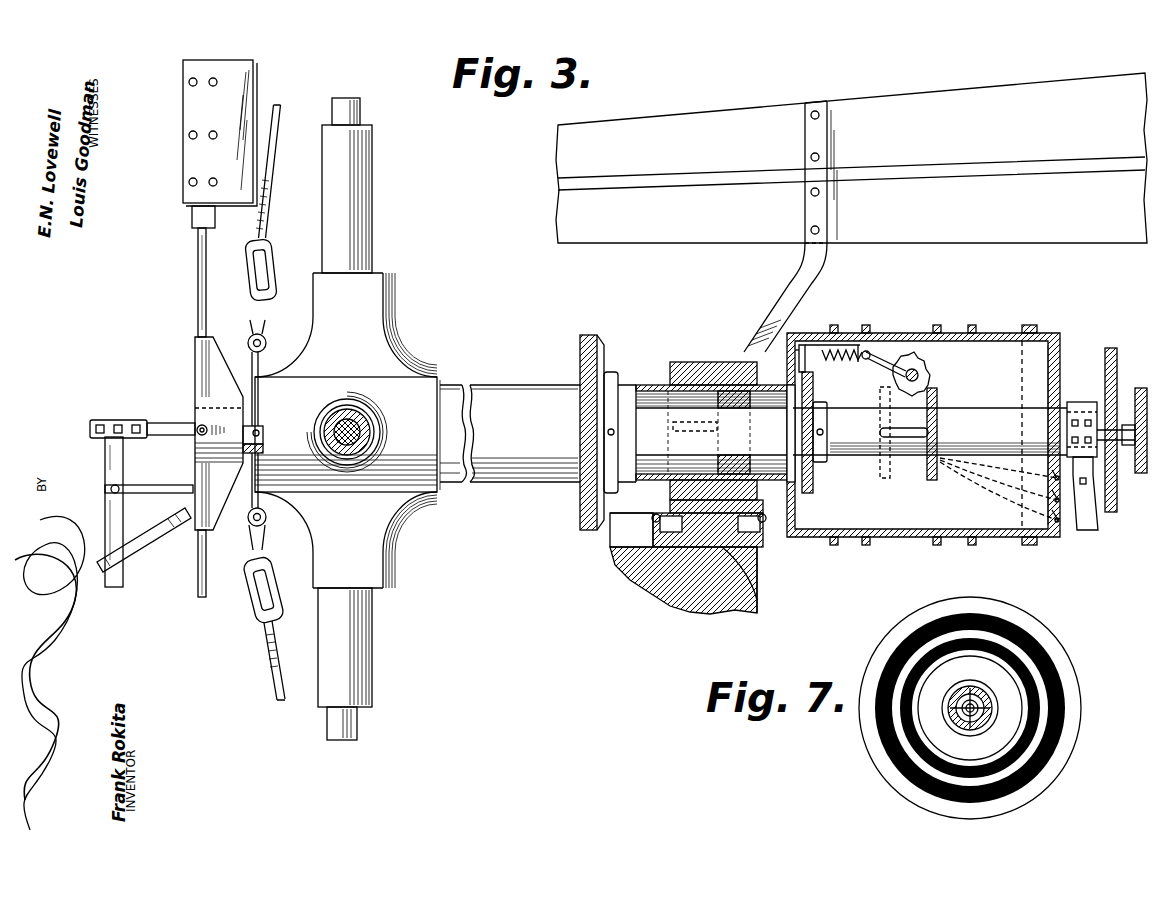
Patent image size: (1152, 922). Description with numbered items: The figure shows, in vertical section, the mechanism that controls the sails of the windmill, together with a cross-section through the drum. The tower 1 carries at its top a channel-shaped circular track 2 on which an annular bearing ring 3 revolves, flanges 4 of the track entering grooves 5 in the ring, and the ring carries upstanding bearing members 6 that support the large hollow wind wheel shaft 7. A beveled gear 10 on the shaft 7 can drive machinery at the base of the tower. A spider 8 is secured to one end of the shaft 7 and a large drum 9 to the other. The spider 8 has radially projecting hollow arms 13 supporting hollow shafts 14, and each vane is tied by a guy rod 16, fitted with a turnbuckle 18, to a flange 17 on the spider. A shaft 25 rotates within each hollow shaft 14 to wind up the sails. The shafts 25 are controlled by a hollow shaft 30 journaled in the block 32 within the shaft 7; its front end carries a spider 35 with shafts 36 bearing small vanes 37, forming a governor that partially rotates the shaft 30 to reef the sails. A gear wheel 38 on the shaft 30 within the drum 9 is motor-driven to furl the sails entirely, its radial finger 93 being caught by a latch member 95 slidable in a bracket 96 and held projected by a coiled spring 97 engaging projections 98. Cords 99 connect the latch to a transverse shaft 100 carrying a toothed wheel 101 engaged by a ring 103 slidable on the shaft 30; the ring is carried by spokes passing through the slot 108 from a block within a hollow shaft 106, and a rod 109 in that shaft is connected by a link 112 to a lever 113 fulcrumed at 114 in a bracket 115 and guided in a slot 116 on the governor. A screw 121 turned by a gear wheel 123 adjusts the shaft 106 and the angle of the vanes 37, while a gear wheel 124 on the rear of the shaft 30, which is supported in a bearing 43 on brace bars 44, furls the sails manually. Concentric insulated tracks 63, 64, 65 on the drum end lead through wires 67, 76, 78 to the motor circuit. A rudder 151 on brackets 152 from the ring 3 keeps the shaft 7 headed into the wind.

In FIG. 3, the tower 1 is at (612, 548).
In FIG. 3, the circular track 2 is at (764, 550).
In FIG. 3, the annular bearing ring 3 is at (757, 597).
In FIG. 3, the flanges 4 is at (630, 580).
In FIG. 3, the grooves 5 is at (670, 503).
In FIG. 3, the bearing members 6 is at (680, 362).
In FIG. 3, the wind wheel shaft 7 is at (490, 382).
In FIG. 3, the spider 8 is at (410, 390).
In FIG. 3, the drum 9 is at (994, 330).
In FIG. 7, the drum 9 is at (1006, 620).
In FIG. 3, the beveled gear 10 is at (579, 360).
In FIG. 3, the hollow arms 13 is at (378, 288).
In FIG. 3, the hollow shafts 14 is at (358, 188).
In FIG. 3, the guy rod 16 is at (270, 182).
In FIG. 3, the flange 17 is at (250, 330).
In FIG. 3, the turnbuckle 18 is at (248, 258).
In FIG. 3, the shaft 25 is at (362, 108).
In FIG. 3, the hollow shaft 30 is at (652, 385).
In FIG. 7, the hollow shaft 30 is at (962, 690).
In FIG. 3, the block 32 is at (718, 462).
In FIG. 3, the spider 35 is at (196, 362).
In FIG. 3, the shafts 36 is at (197, 260).
In FIG. 3, the vanes 37 is at (183, 152).
In FIG. 3, the gear wheel 38 is at (808, 494).
In FIG. 3, the bearing 43 is at (1090, 392).
In FIG. 3, the brace bars 44 is at (1098, 520).
In FIG. 3, the insulated track 63 is at (1060, 500).
In FIG. 7, the insulated track 63 is at (962, 655).
In FIG. 3, the insulated track 64 is at (1060, 520).
In FIG. 7, the insulated track 64 is at (928, 733).
In FIG. 3, the insulated track 65 is at (1050, 530).
In FIG. 7, the insulated track 65 is at (940, 767).
In FIG. 3, the wire 67 is at (1000, 468).
In FIG. 3, the wire 76 is at (975, 482).
In FIG. 3, the wire 78 is at (1020, 505).
In FIG. 3, the finger 93 is at (790, 378).
In FIG. 3, the latch member 95 is at (812, 345).
In FIG. 3, the bracket 96 is at (848, 345).
In FIG. 3, the coiled spring 97 is at (846, 362).
In FIG. 3, the projections 98 is at (812, 362).
In FIG. 3, the cords 99 is at (900, 360).
In FIG. 3, the shaft 100 is at (930, 372).
In FIG. 3, the toothed wheel 101 is at (920, 378).
In FIG. 3, the ring 103 is at (930, 480).
In FIG. 7, the hollow shaft 106 is at (982, 722).
In FIG. 3, the longitudinal slot 108 is at (878, 440).
In FIG. 3, the rod 109 is at (178, 410).
In FIG. 7, the rod 109 is at (956, 707).
In FIG. 3, the link 112 is at (132, 420).
In FIG. 3, the lever 113 is at (106, 458).
In FIG. 3, the fulcrum 114 is at (110, 490).
In FIG. 3, the bracket 115 is at (170, 476).
In FIG. 3, the slot 116 is at (170, 538).
In FIG. 3, the screw 121 is at (1132, 446).
In FIG. 3, the gear wheel 123 is at (1141, 388).
In FIG. 3, the gear wheel 124 is at (1112, 348).
In FIG. 3, the rudder 151 is at (851, 158).
In FIG. 3, the brackets 152 is at (786, 278).